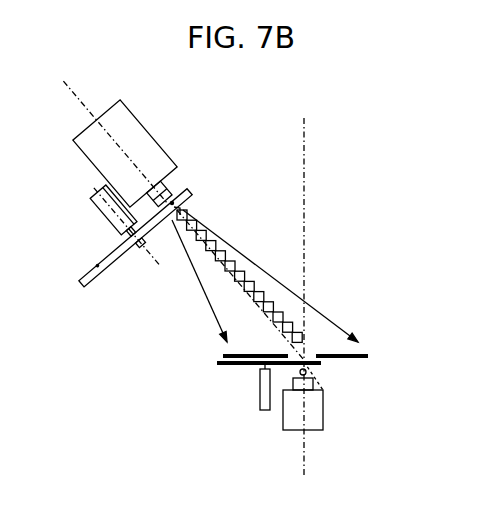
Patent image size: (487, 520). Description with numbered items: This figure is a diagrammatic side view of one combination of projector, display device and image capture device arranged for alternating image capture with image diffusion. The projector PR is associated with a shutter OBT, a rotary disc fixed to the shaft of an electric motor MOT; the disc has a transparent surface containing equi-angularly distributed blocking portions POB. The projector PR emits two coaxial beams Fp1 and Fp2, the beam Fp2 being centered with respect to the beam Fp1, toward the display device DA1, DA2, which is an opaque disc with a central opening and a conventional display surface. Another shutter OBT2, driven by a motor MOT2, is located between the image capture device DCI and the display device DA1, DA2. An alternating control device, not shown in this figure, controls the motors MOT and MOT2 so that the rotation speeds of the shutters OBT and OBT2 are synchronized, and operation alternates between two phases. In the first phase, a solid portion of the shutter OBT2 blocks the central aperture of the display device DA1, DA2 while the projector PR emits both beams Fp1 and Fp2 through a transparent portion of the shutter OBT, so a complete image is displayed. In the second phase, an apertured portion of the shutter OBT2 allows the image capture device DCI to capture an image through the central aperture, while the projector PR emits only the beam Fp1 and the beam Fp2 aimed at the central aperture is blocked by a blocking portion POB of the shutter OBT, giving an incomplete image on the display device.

The projector PR is at (143, 119).
The shutter portion POB is at (172, 200).
The shutter OBT is at (178, 207).
The electric motor MOT is at (107, 211).
The beam Fp1 is at (208, 278).
The beam Fp2 is at (250, 306).
The shutter OBT2 is at (225, 365).
The motor MOT2 is at (260, 390).
The display device DA1 is at (347, 363).
The display device DA2 is at (377, 390).
The image capture device DCI is at (310, 431).